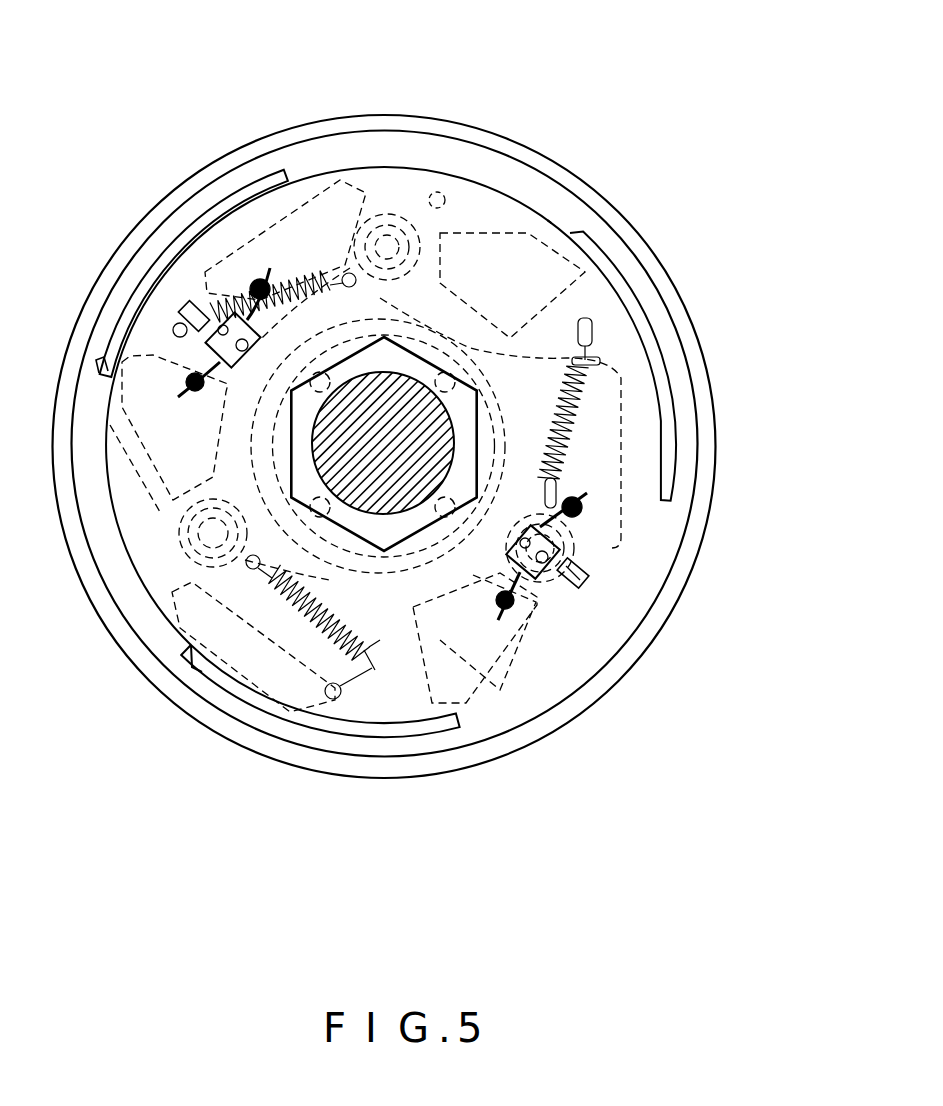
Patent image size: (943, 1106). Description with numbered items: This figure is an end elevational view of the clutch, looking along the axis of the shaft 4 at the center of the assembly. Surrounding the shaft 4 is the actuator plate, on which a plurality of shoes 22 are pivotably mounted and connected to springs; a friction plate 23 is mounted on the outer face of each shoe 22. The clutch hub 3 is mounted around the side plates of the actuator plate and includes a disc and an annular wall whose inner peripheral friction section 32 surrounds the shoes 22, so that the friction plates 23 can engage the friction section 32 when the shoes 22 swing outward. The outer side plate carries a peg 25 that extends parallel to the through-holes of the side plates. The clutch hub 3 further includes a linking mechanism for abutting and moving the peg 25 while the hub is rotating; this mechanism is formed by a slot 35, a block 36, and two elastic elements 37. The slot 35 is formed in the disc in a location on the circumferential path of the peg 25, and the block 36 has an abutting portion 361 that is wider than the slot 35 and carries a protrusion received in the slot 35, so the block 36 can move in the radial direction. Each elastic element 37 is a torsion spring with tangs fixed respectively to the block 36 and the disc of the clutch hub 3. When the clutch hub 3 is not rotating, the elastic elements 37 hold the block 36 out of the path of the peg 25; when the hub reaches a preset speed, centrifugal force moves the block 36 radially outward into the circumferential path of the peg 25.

The clutch hub 3 is at (565, 165).
The inner peripheral friction section 32 is at (580, 200).
The friction plate 23 is at (648, 315).
The shoe 22 is at (585, 302).
The peg 25 is at (436, 190).
The shaft 4 is at (390, 472).
The slot 35 is at (550, 592).
The block 36 is at (562, 594).
The abutting portion 361 is at (558, 536).
The elastic element 37 is at (587, 493).